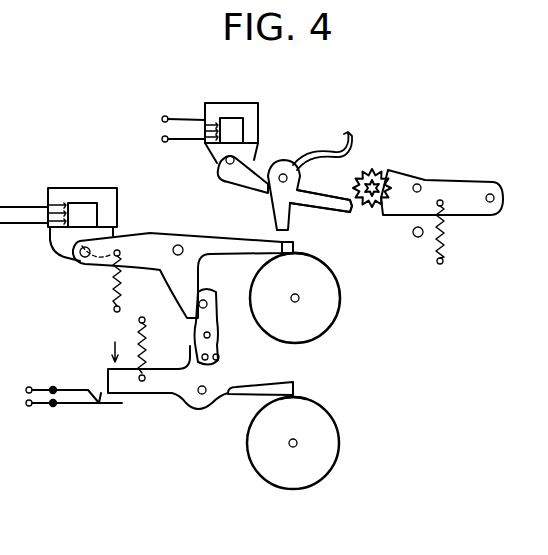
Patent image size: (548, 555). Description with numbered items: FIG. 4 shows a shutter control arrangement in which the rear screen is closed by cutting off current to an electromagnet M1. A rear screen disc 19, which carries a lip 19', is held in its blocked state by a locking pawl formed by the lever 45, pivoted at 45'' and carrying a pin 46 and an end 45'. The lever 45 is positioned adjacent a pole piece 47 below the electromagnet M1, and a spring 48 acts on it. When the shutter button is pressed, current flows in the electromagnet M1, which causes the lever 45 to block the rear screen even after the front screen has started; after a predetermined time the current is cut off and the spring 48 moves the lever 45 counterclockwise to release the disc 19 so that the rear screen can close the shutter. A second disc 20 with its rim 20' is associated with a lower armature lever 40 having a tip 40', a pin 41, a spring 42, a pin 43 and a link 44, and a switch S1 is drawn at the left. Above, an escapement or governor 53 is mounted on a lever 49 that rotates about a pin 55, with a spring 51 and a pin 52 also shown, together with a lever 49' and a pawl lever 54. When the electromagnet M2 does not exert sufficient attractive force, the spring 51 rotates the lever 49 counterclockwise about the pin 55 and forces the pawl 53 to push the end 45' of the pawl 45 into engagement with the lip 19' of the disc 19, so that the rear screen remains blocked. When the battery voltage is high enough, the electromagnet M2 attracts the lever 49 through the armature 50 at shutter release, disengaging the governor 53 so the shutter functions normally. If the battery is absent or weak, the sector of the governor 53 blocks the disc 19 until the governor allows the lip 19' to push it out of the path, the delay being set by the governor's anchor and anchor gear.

The disc 19 is at (312, 298).
The lip 19' is at (332, 252).
The wheel 20 is at (311, 443).
The wheel rim contact 20' is at (314, 373).
The armature lever 40 is at (168, 390).
The armature lever tip 40' is at (257, 406).
The pin 41 is at (202, 394).
The spring 42 is at (147, 336).
The pin 43 is at (219, 357).
The link 44 is at (212, 320).
The lever 45 is at (177, 253).
The end of pawl 45' is at (265, 226).
The pivot 45'' is at (71, 274).
The pin 46 is at (178, 245).
The pole piece 47 is at (58, 252).
The spring 48 is at (110, 297).
The lever 49 is at (442, 177).
The lever 49' is at (219, 174).
The armature 50 is at (247, 152).
The spring 51 is at (443, 250).
The pin 52 is at (416, 237).
The governor 53 is at (358, 150).
The pawl lever 54 is at (298, 168).
The pin 55 is at (500, 215).
The electromagnet M1 is at (86, 193).
The electromagnet M2 is at (247, 110).
The switch S1 is at (74, 416).